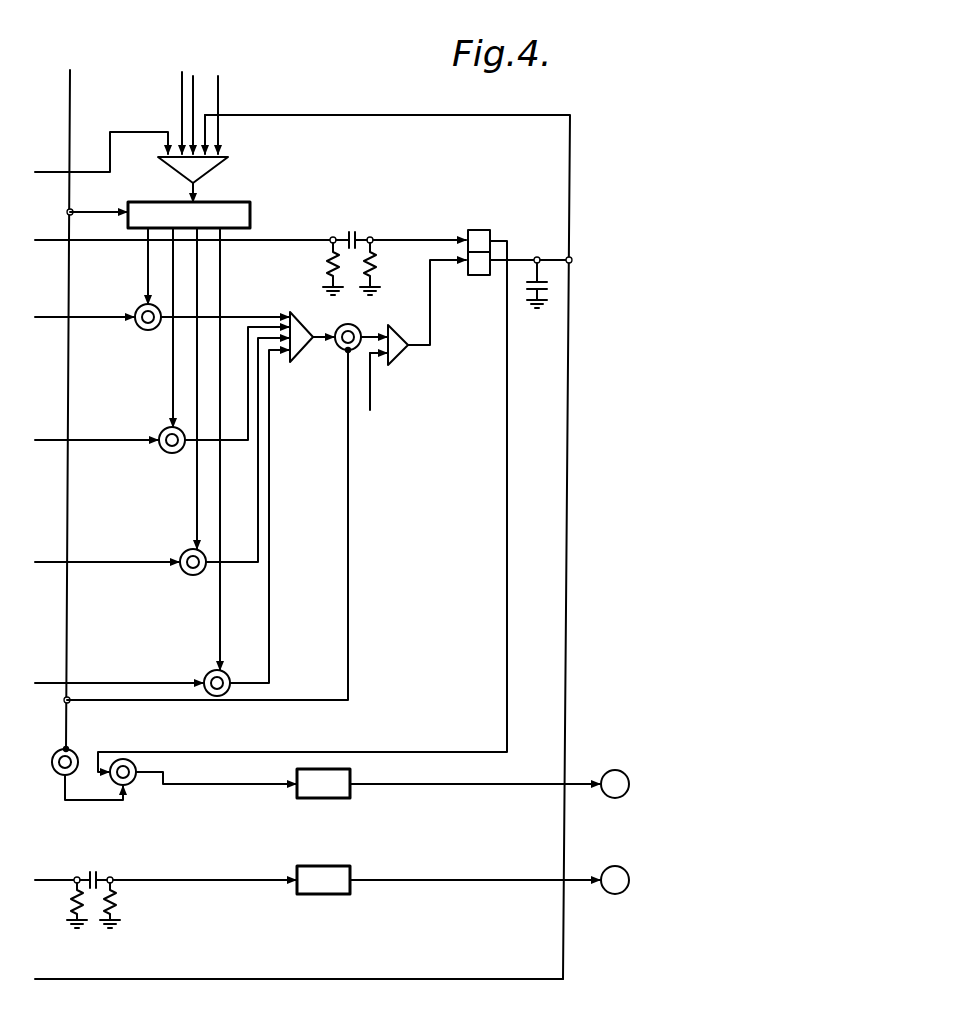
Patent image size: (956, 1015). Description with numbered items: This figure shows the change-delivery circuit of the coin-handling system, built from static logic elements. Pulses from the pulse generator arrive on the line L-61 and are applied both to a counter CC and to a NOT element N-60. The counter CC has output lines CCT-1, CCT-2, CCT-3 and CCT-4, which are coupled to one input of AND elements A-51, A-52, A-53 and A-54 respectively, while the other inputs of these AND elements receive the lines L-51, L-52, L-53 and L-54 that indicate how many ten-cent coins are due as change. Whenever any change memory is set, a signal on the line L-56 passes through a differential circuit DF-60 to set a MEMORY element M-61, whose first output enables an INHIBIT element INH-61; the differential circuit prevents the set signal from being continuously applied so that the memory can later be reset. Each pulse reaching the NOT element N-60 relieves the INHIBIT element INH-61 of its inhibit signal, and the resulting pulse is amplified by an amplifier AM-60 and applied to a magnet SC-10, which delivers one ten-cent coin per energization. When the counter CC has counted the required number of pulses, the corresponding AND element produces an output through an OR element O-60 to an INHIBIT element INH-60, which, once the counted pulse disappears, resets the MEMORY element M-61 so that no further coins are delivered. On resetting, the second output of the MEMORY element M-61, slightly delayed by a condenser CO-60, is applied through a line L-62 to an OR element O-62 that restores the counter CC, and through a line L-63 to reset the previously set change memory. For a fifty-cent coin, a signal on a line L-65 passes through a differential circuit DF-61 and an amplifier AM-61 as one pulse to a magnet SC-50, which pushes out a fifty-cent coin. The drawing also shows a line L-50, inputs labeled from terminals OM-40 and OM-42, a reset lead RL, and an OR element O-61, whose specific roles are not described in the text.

The line L-61 is at (71, 81).
The lead L-50 is at (52, 170).
The input from OM-40 is at (182, 74).
The output terminal OM-42 is at (194, 82).
The reset lead RL is at (219, 92).
The OR element O-62 is at (213, 165).
The counter CC is at (152, 201).
The output line of counter CCT-1 is at (147, 234).
The output line of counter CCT-2 is at (146, 288).
The output line of counter CCT-3 is at (198, 253).
The output line of counter CCT-4 is at (221, 276).
The line L-56 is at (58, 241).
The differential circuit DF-60 is at (393, 244).
The MEMORY element M-61 is at (495, 214).
The line L-62 is at (569, 166).
The condenser CO-60 is at (552, 285).
The line L-51 is at (52, 316).
The AND element A-51 is at (158, 329).
The OR element O-60 is at (300, 312).
The INHIBIT element INH-60 is at (340, 350).
The OR gate O-61 is at (400, 359).
The line L-63 is at (566, 410).
The line L-52 is at (55, 439).
The AND element A-52 is at (183, 452).
The line L-53 is at (55, 561).
The AND element A-53 is at (188, 576).
The line L-54 is at (50, 682).
The AND element A-54 is at (207, 674).
The NOT element N-60 is at (60, 776).
The INHIBIT element INH-61 is at (128, 760).
The amplifier AM-60 is at (352, 798).
The magnet SC-10 is at (617, 770).
The line L-65 is at (52, 878).
The differential circuit DF-61 is at (100, 878).
The amplifier AM-61 is at (351, 874).
The magnet SC-50 is at (617, 866).